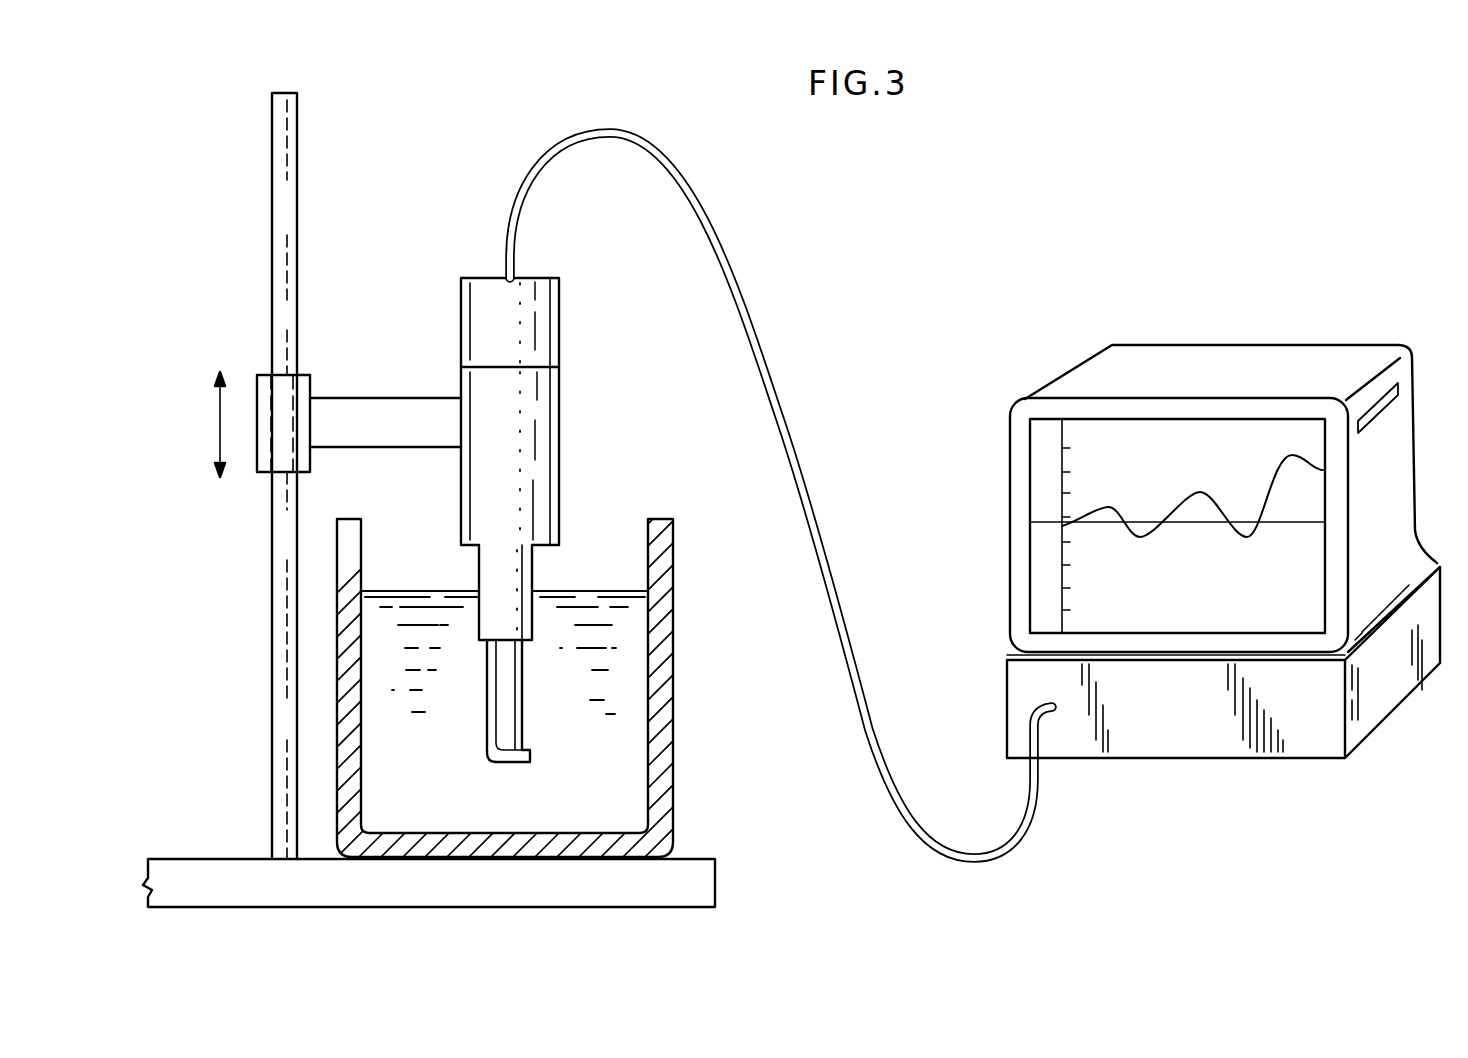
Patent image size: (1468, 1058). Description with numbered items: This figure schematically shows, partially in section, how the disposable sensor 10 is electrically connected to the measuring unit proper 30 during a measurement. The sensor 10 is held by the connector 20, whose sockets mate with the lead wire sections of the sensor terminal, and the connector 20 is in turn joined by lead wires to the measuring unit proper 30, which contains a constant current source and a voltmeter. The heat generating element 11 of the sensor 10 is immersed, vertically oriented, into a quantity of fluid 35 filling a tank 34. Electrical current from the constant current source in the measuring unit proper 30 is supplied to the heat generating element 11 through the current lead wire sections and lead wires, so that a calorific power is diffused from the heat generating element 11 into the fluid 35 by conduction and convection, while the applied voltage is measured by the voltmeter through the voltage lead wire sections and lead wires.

The disposable sensor 10 is at (551, 520).
The heat generating element 11 is at (522, 713).
The connector 20 is at (559, 325).
The measuring unit proper 30 is at (1264, 347).
The tank 34 is at (660, 603).
The fluid 35 is at (630, 770).